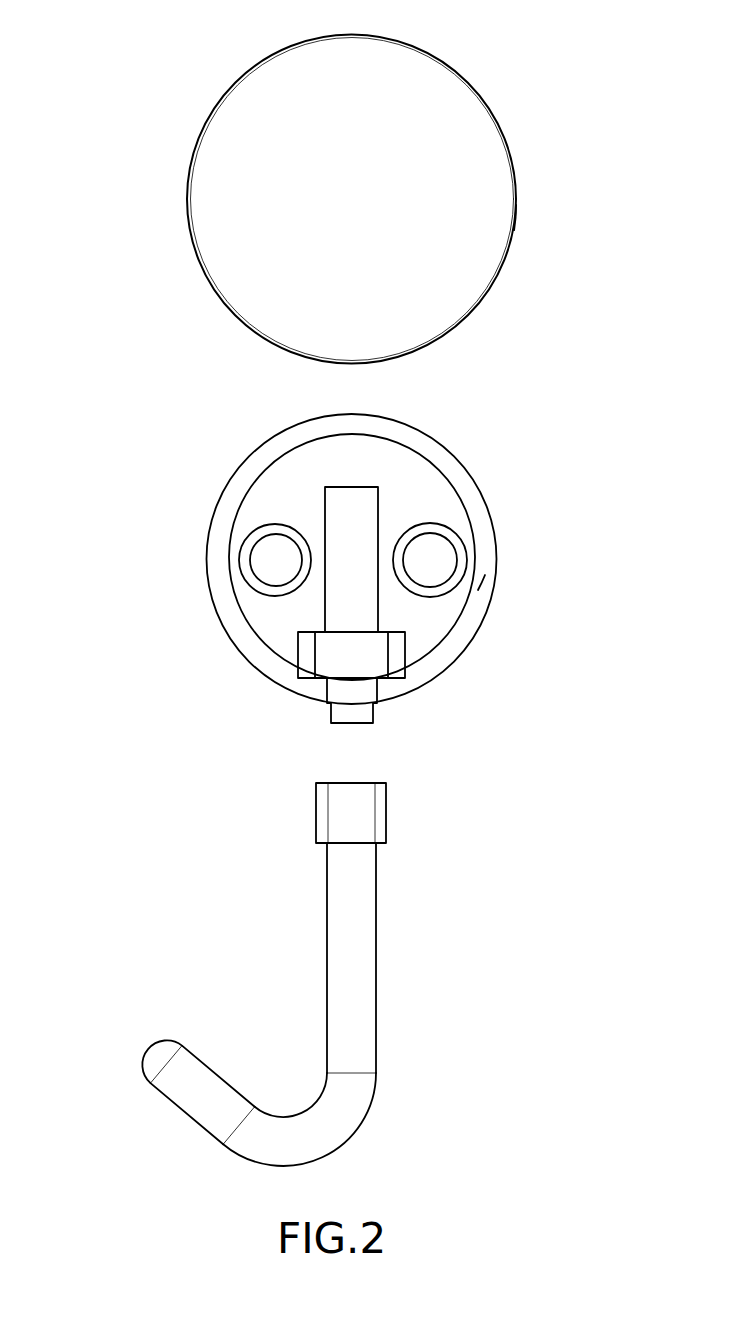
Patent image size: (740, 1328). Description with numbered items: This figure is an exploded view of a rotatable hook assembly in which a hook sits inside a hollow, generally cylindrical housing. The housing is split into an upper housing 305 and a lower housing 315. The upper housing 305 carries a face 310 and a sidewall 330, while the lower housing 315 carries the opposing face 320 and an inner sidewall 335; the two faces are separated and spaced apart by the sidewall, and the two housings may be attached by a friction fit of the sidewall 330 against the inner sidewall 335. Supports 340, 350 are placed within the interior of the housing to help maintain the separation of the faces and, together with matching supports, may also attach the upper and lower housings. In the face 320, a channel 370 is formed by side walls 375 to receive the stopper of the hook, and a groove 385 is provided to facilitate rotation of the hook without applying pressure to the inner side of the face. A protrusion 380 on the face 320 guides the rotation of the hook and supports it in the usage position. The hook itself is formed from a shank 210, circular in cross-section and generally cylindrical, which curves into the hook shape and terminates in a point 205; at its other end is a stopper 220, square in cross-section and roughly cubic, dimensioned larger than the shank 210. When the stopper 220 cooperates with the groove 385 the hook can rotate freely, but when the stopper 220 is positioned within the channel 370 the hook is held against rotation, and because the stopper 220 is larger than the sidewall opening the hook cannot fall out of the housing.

The point 205 is at (163, 1060).
The shank 210 is at (342, 1032).
The stopper 220 is at (341, 822).
The upper housing 305 is at (443, 60).
The face 310 is at (232, 144).
The lower housing 315 is at (437, 440).
The face 320 is at (290, 497).
The sidewall 330 is at (513, 230).
The inner sidewall 335 is at (478, 590).
The support 340 is at (268, 564).
The support 350 is at (435, 557).
The channel 370 is at (338, 650).
The side walls 375 is at (307, 652).
The protrusion 380 is at (359, 712).
The groove 385 is at (345, 507).